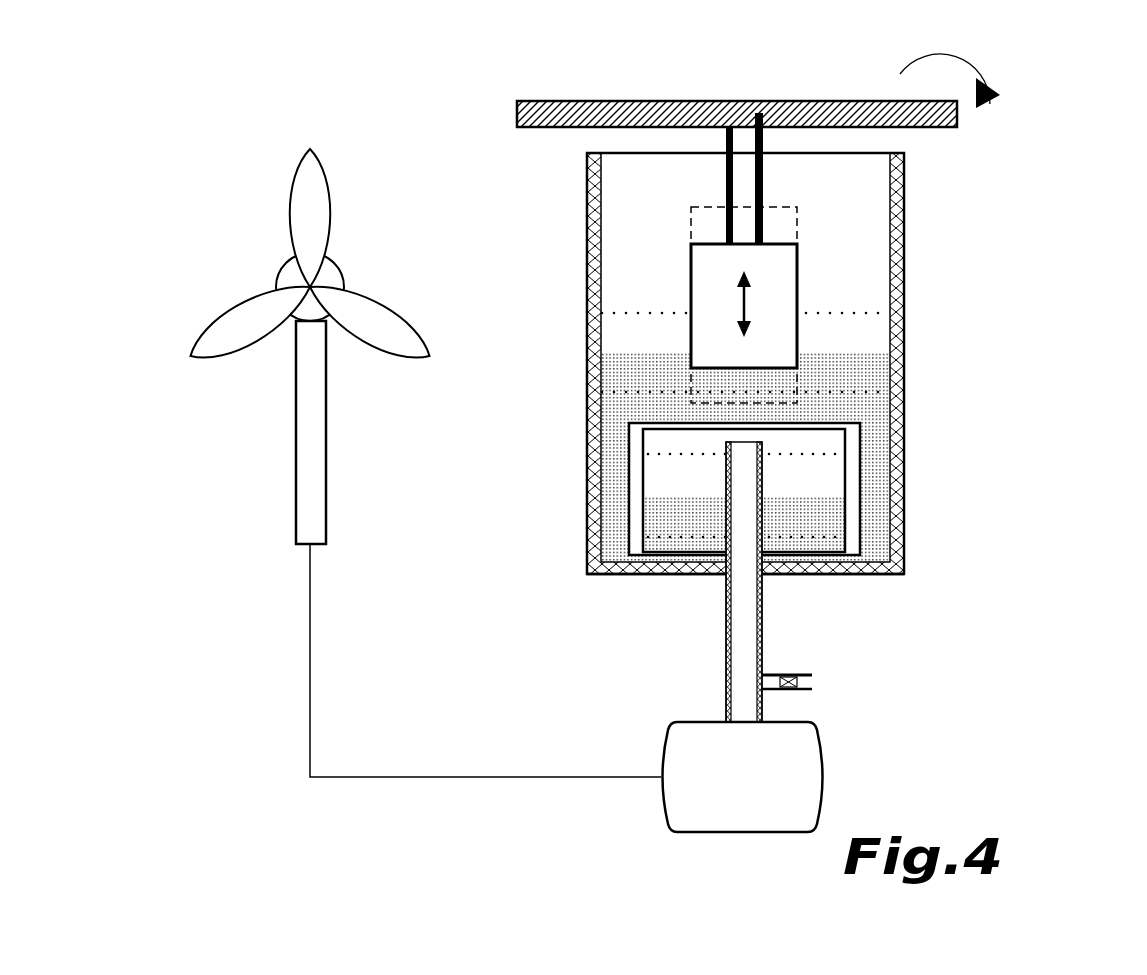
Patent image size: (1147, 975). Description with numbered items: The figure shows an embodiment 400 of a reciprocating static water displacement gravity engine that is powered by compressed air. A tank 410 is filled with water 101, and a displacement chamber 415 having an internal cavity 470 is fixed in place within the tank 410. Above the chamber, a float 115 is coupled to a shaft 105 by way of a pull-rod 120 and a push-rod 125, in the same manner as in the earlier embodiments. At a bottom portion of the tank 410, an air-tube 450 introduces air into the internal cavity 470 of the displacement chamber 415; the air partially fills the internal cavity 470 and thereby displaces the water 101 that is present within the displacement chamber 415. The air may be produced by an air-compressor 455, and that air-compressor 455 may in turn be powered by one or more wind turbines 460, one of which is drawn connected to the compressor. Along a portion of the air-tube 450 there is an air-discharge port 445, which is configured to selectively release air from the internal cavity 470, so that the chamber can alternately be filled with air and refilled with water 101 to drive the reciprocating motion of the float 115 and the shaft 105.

The reciprocating static water displacement gravity engine 400 is at (1024, 92).
The shaft 105 is at (517, 113).
The pull-rod 120 is at (726, 170).
The push-rod 125 is at (763, 162).
The float 115 is at (688, 277).
The tank 410 is at (587, 470).
The displacement chamber 415 is at (904, 445).
The internal cavity 470 is at (830, 477).
The water 101 is at (598, 576).
The air-tube 450 is at (726, 578).
The air-discharge port 445 is at (812, 682).
The air-compressor 455 is at (823, 777).
The wind turbine 460 is at (326, 429).